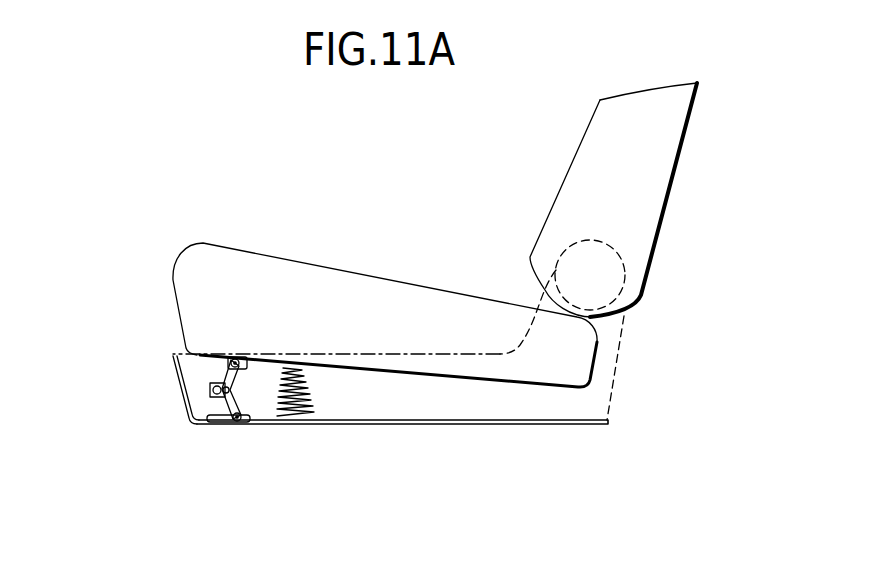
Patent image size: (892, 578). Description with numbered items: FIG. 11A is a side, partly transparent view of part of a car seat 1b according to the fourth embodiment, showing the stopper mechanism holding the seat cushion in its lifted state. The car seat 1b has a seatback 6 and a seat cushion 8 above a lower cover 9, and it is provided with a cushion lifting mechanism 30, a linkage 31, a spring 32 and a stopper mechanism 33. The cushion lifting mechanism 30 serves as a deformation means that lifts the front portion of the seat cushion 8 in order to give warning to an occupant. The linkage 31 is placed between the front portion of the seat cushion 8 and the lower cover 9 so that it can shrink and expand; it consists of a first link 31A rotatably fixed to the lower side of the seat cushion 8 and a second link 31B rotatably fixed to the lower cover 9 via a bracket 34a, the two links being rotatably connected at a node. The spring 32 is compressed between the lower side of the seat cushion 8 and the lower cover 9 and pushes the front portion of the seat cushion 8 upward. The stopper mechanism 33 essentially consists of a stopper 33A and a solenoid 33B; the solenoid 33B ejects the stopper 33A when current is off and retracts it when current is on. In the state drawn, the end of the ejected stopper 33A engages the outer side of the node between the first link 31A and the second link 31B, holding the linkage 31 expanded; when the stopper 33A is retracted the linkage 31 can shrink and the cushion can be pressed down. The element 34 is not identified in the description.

The car seat 1b is at (630, 251).
The seatback 6 is at (680, 120).
The seat cushion 8 is at (412, 282).
The lower cover 9 is at (387, 419).
The cushion lifting mechanism 30 is at (209, 367).
The linkage 31 is at (251, 438).
The first link 31A is at (243, 372).
The second link 31B is at (233, 451).
The spring 32 is at (306, 387).
The stopper mechanism 33 is at (139, 402).
The stopper 33A is at (208, 390).
The solenoid 33B is at (212, 384).
The lever 34 is at (195, 376).
The bracket 34a is at (207, 425).